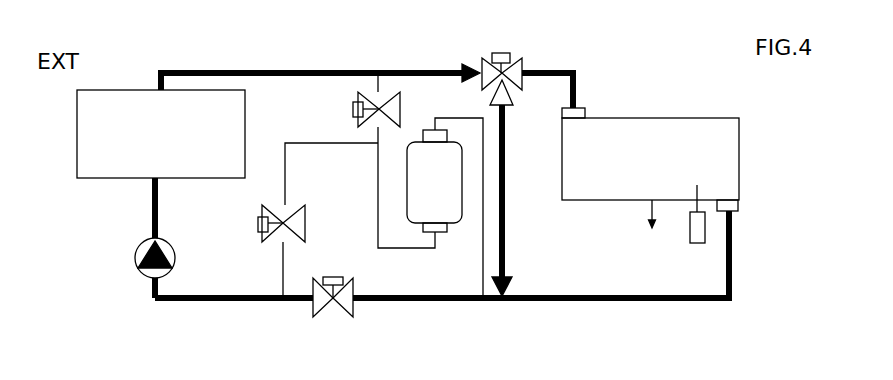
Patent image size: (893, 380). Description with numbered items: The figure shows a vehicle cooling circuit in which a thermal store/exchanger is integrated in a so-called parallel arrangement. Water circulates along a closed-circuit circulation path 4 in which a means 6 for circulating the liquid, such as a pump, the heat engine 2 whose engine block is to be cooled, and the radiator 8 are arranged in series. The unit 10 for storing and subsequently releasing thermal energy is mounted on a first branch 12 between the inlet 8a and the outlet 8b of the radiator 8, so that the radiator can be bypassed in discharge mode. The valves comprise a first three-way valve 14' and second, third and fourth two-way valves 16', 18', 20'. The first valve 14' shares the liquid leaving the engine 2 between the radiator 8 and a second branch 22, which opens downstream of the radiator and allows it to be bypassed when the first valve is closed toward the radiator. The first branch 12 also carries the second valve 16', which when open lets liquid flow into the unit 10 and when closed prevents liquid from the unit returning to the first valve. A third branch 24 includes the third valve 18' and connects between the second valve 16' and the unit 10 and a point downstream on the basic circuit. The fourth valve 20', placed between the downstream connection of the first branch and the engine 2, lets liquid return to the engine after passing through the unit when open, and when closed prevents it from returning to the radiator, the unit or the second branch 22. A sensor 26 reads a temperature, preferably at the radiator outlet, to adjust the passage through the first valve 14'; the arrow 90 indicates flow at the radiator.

The heat engine 2 is at (88, 178).
The closed-circuit circulation path 4 is at (587, 307).
The means for circulating the liquid 6 is at (180, 248).
The radiator 8 is at (708, 116).
The inlet of the radiator 8a is at (578, 108).
The outlet of the radiator 8b is at (742, 207).
The unit for storing and releasing thermal energy 10 is at (450, 212).
The first branch 12 is at (377, 86).
The first three-way valve 14' is at (521, 71).
The second two-way valve 16' is at (396, 107).
The third two-way valve 18' is at (298, 204).
The fourth two-way valve 20' is at (354, 293).
The second branch 22 is at (508, 200).
The third branch 24 is at (310, 142).
The sensor 26 is at (697, 225).
The fluid flow 90 is at (673, 151).